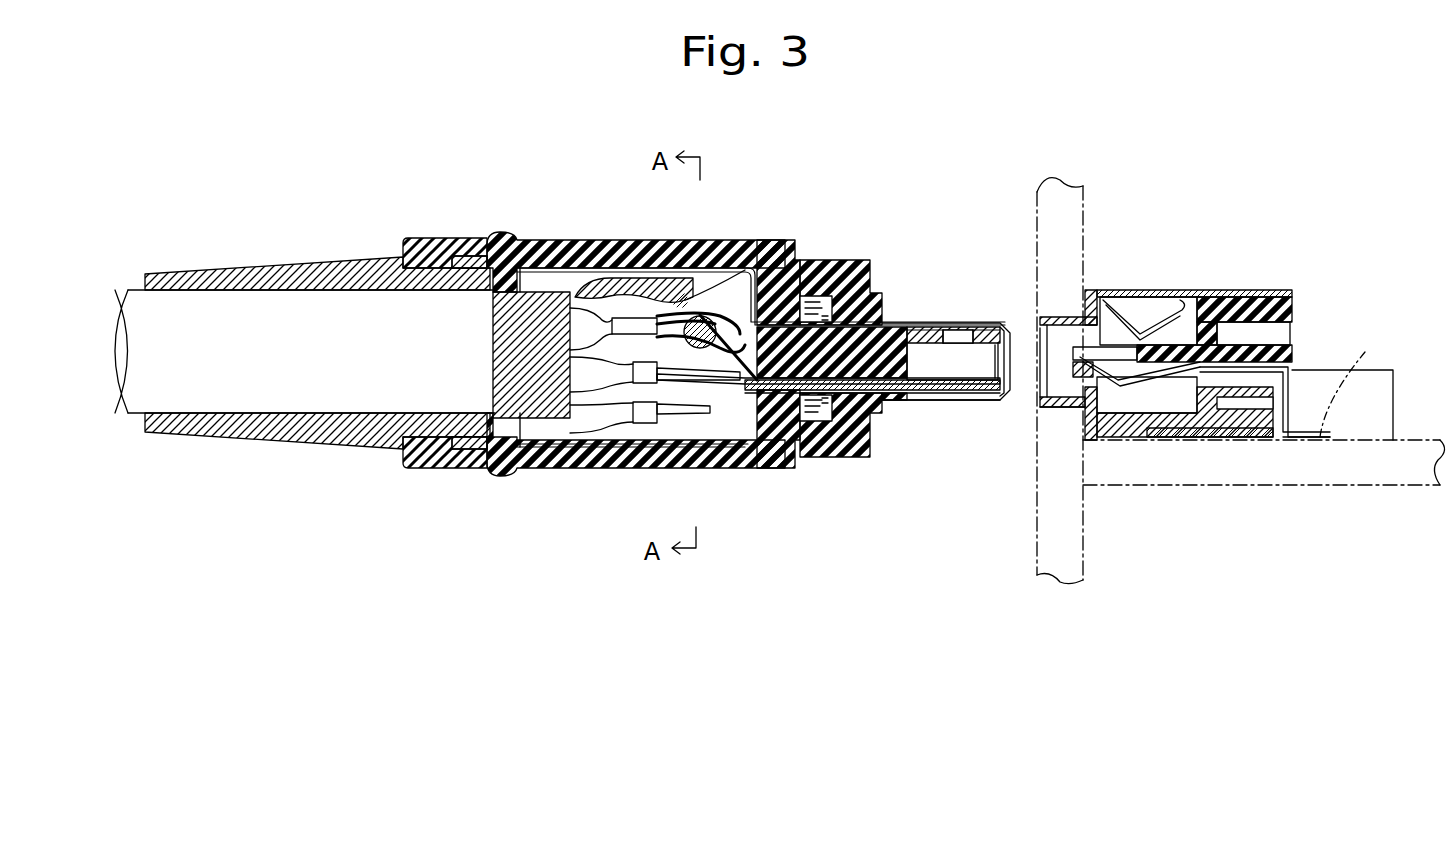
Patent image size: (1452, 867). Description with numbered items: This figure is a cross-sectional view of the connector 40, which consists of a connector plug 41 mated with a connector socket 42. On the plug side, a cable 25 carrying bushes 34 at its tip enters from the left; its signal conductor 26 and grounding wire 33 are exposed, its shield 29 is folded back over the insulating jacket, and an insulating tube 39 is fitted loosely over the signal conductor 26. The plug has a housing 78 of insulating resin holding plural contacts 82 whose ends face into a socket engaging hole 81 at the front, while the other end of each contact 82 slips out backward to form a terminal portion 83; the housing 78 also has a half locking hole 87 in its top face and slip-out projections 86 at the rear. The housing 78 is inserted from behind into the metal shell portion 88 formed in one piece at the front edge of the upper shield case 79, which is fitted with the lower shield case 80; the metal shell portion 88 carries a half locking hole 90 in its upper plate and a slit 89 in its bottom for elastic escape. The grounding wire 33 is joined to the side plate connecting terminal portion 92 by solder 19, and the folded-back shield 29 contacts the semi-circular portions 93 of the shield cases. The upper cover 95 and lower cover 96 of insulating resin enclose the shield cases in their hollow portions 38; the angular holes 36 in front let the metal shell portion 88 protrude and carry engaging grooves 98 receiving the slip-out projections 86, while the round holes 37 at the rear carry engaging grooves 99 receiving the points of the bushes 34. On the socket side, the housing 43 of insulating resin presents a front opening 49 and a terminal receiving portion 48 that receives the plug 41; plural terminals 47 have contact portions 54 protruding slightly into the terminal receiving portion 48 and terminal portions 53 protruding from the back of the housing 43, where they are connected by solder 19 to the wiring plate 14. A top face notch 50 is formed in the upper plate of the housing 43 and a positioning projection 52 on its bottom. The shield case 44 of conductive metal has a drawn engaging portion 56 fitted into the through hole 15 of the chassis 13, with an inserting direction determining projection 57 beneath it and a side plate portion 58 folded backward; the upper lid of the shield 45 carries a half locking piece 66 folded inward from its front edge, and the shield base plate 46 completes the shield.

The panel 13 is at (1083, 202).
The wiring plate 14 is at (1392, 485).
The through hole 15 is at (1042, 298).
The solder 19 is at (692, 300).
The cable 25 is at (128, 292).
The signal conductor 26 is at (642, 388).
The shield 29 is at (510, 362).
The grounding wire 33 is at (614, 280).
The bush 34 is at (262, 274).
The angular hole 36 is at (886, 316).
The round hole 37 is at (433, 470).
The hollow portion 38 is at (604, 405).
The insulating tube 39 is at (718, 312).
The connector 40 is at (1027, 107).
The connector plug 41 is at (954, 163).
The connector socket 42 is at (1050, 152).
The housing 43 is at (1235, 292).
The shield case 44 is at (1060, 316).
The upper lid of the shield 45 is at (1272, 293).
The shield base plate 46 is at (1232, 440).
The terminal 47 is at (1290, 366).
The terminal receiving portion 48 is at (1088, 402).
The front opening 49 is at (1090, 300).
The top face notch 50 is at (1180, 300).
The positioning projection 52 is at (1135, 440).
The terminal portion 53 is at (1302, 440).
The contact portion 54 is at (1140, 382).
The engaging portion 56 is at (1050, 385).
The inserting direction determining projection 57 is at (1062, 400).
The side plate portion 58 is at (1388, 412).
The half locking piece 66 is at (1145, 300).
The housing 78 is at (872, 418).
The upper shield case 79 is at (572, 250).
The lower shield case 80 is at (712, 468).
The socket engaging hole 81 is at (976, 372).
The contact 82 is at (922, 390).
The terminal portion 83 is at (800, 262).
The slip-out projection 86 is at (858, 264).
The half locking hole 87 is at (964, 333).
The metal shell portion 88 is at (924, 324).
The slit 89 is at (955, 388).
The half locking hole 90 is at (978, 327).
The side plate connecting terminal portion 92 is at (660, 278).
The semi-circular portion 93 is at (546, 268).
The upper cover 95 is at (770, 240).
The lower cover 96 is at (766, 468).
The engaging groove 98 is at (826, 300).
The engaging groove 99 is at (472, 240).